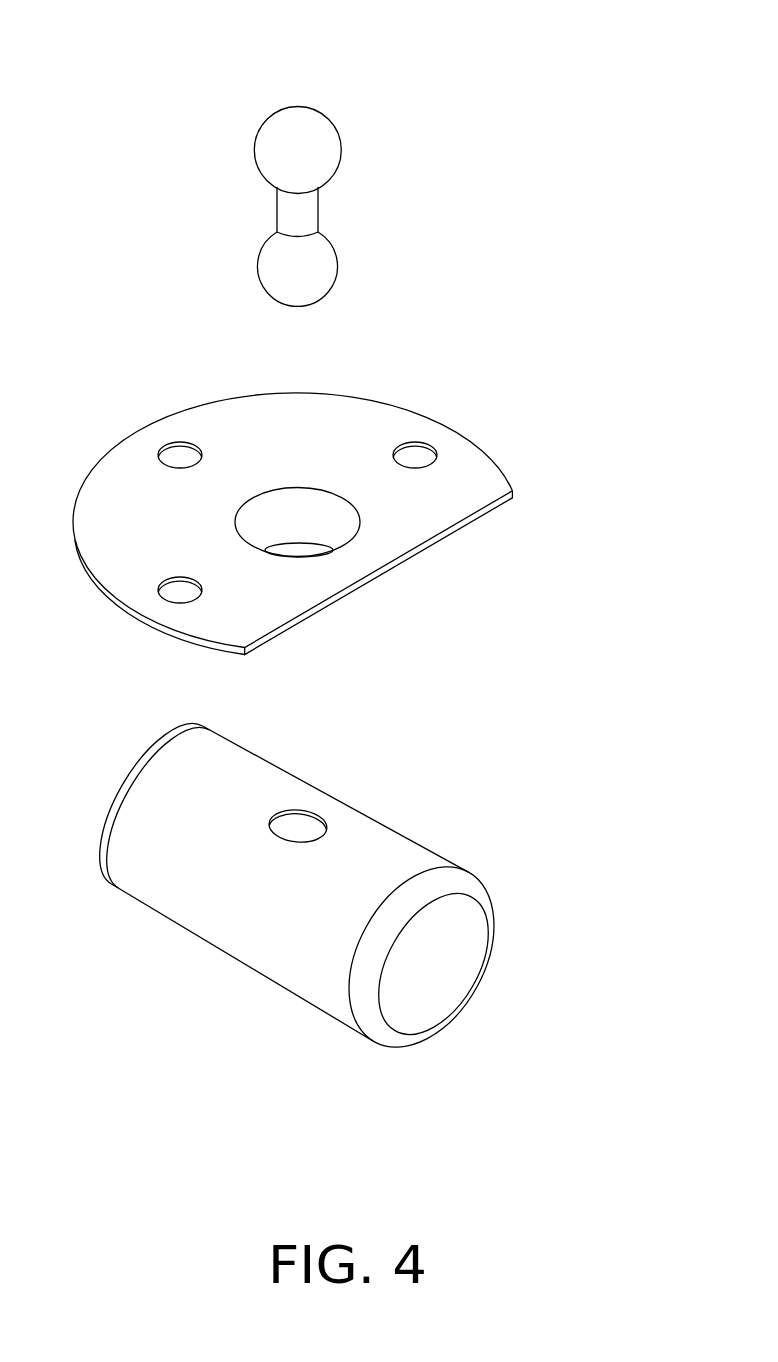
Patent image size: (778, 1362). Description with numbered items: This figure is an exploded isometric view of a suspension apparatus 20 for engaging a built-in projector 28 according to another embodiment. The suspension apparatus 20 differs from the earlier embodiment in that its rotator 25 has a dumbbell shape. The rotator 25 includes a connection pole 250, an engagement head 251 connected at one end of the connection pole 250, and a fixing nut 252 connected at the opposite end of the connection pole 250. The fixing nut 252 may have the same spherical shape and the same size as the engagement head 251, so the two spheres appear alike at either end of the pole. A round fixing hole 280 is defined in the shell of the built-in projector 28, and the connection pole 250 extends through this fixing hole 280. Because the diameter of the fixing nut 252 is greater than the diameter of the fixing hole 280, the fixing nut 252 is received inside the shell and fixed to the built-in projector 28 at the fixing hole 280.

The suspension apparatus 20 is at (347, 35).
The rotator 25 is at (441, 143).
The engagement head 251 is at (323, 157).
The connection pole 250 is at (307, 200).
The fixing nut 252 is at (318, 265).
The built-in projector 28 is at (270, 927).
The fixing hole 280 is at (302, 822).